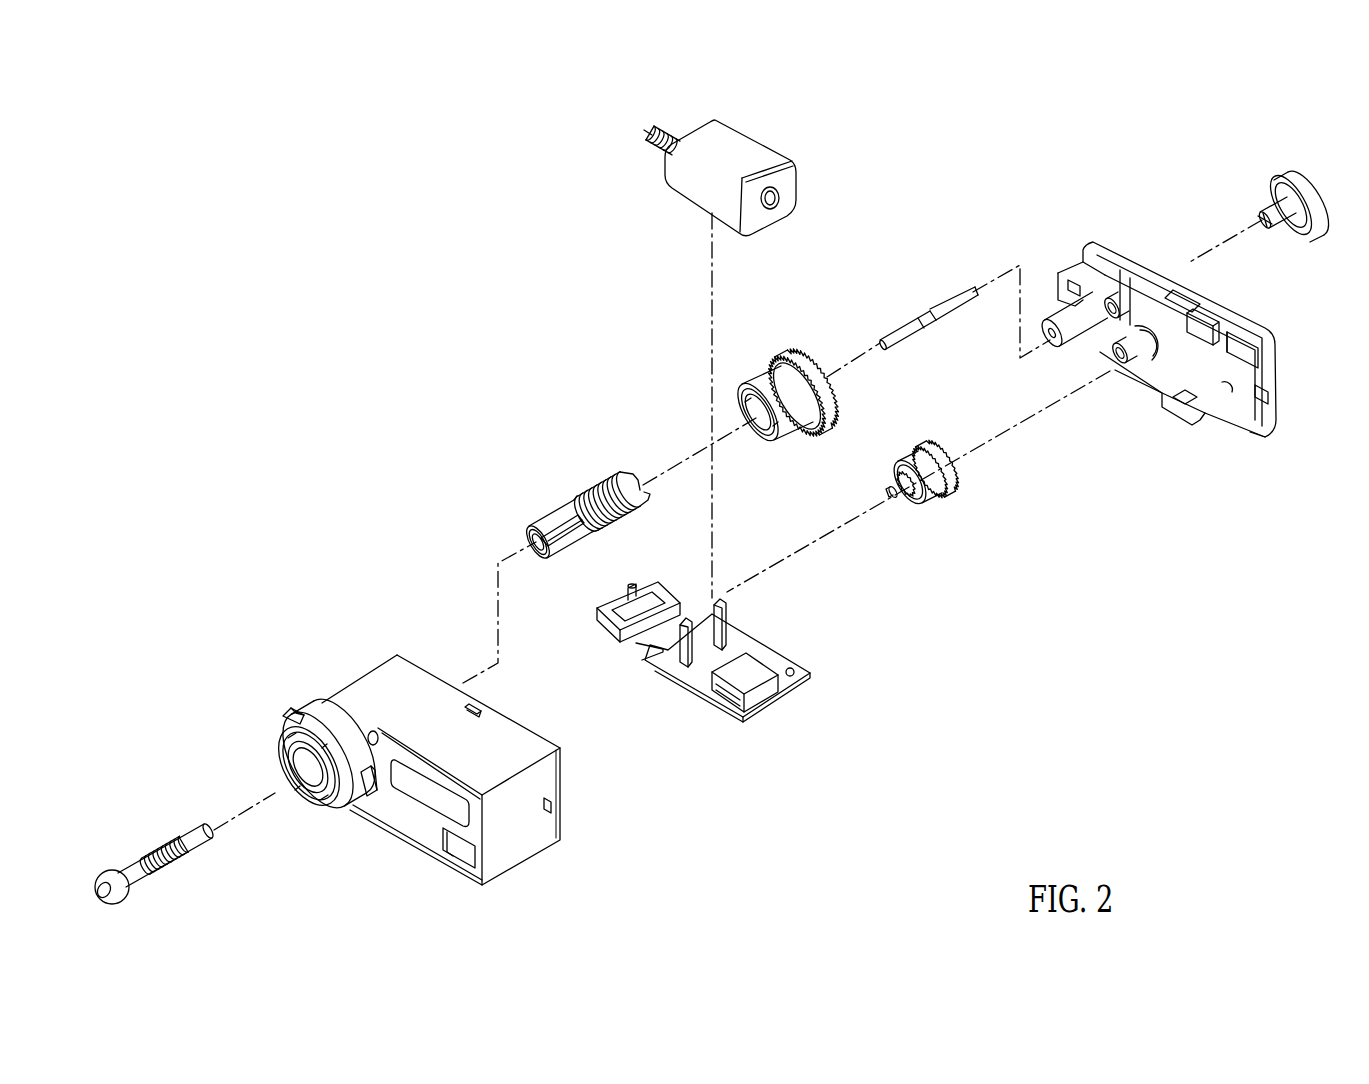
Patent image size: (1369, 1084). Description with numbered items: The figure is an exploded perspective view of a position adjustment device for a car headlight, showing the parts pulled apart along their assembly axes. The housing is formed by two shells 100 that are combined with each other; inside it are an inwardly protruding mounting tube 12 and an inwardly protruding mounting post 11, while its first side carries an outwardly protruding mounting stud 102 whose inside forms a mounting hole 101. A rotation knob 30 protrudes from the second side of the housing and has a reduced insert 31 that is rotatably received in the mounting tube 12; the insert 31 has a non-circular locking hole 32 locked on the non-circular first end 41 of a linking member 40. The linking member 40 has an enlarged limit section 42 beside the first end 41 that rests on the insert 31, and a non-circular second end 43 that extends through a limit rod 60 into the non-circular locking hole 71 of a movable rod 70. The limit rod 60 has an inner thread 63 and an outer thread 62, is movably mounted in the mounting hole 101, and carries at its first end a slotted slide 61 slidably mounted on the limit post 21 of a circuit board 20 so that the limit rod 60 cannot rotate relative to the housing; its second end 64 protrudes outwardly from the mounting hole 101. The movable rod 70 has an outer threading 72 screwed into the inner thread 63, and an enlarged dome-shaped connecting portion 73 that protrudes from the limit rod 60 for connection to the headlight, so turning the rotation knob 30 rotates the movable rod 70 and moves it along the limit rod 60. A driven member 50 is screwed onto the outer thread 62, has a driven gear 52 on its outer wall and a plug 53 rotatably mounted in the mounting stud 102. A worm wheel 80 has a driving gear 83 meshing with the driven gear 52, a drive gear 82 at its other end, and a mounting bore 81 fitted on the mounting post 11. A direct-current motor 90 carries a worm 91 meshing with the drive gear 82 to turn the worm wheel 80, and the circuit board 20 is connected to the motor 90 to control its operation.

The mounting post 11 is at (1120, 362).
The mounting tube 12 is at (1110, 304).
The circuit board 20 is at (774, 716).
The limit post 21 is at (622, 608).
The rotation knob 30 is at (1277, 228).
The insert 31 is at (1304, 188).
The locking hole 32 is at (1260, 217).
The linking member 40 is at (899, 277).
The first end 41 is at (952, 292).
The limit section 42 is at (952, 308).
The second end 43 is at (915, 292).
The driven member 50 is at (833, 351).
The driven gear 52 is at (792, 358).
The plug 53 is at (750, 386).
The limit rod 60 is at (555, 510).
The slotted slide 61 is at (647, 499).
The outer thread 62 is at (600, 484).
The inner thread 63 is at (526, 541).
The second end 64 is at (567, 535).
The movable rod 70 is at (239, 779).
The locking hole 71 is at (190, 822).
The outer threading 72 is at (151, 850).
The connecting portion 73 is at (100, 870).
The worm wheel 80 is at (976, 551).
The mounting bore 81 is at (953, 472).
The drive gear 82 is at (952, 487).
The driving gear 83 is at (920, 510).
The direct-current motor 90 is at (637, 172).
The worm 91 is at (643, 132).
The shell 100 is at (357, 667).
The mounting hole 101 is at (325, 815).
The mounting stud 102 is at (330, 730).